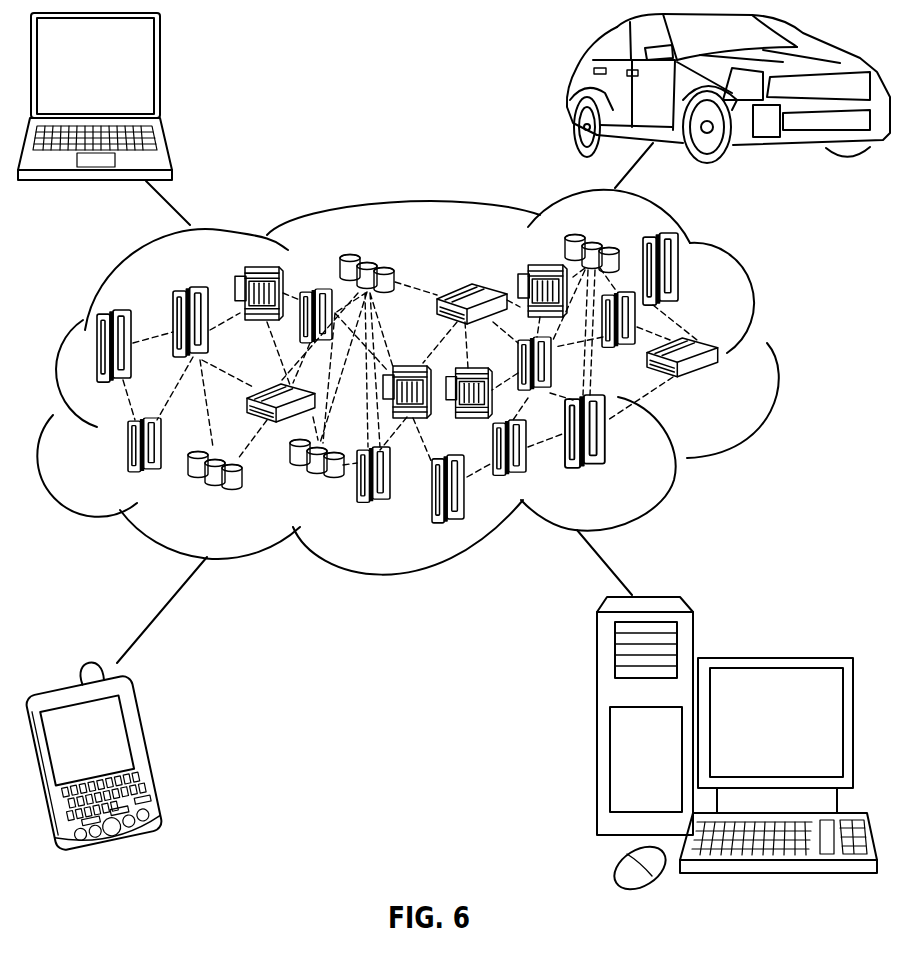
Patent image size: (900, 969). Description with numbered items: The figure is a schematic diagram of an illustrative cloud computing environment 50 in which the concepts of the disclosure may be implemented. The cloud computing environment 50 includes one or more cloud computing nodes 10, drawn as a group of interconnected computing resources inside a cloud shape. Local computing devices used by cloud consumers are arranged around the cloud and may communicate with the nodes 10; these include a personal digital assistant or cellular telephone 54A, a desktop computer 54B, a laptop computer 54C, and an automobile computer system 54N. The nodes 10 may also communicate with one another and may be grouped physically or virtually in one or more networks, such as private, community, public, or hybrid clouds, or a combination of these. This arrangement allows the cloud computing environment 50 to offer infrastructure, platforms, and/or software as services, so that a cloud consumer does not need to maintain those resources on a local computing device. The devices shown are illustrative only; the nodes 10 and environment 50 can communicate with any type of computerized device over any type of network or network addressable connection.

The cloud computing node 10 is at (732, 396).
The cloud computing environment 50 is at (777, 357).
The personal digital assistant (PDA) or cellular telephone 54A is at (152, 753).
The desktop computer 54B is at (775, 656).
The laptop computer 54C is at (160, 72).
The automobile computer system 54N is at (567, 88).